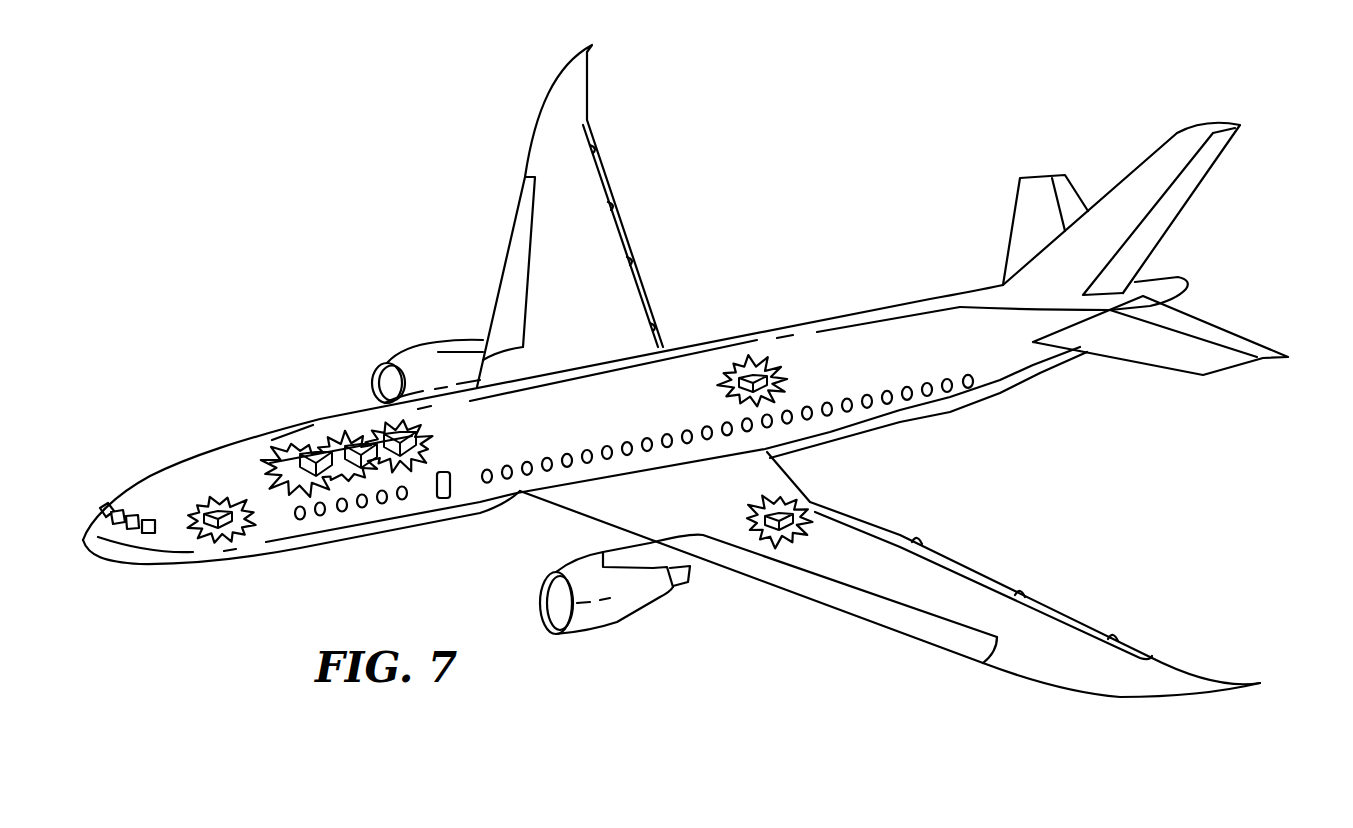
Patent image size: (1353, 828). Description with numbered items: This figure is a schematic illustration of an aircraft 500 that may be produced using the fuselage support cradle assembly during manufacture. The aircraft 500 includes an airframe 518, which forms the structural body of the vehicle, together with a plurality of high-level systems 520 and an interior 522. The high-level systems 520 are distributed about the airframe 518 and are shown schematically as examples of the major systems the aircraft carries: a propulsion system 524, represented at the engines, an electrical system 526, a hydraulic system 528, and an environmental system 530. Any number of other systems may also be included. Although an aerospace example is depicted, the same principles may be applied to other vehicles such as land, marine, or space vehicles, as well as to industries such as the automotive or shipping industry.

The aircraft 500 is at (360, 207).
The airframe 518 is at (338, 392).
The high-level systems 520 is at (1168, 533).
The interior 522 is at (333, 480).
The propulsion system 524 is at (412, 358).
The electrical system 526 is at (213, 507).
The hydraulic system 528 is at (797, 497).
The environmental system 530 is at (752, 367).